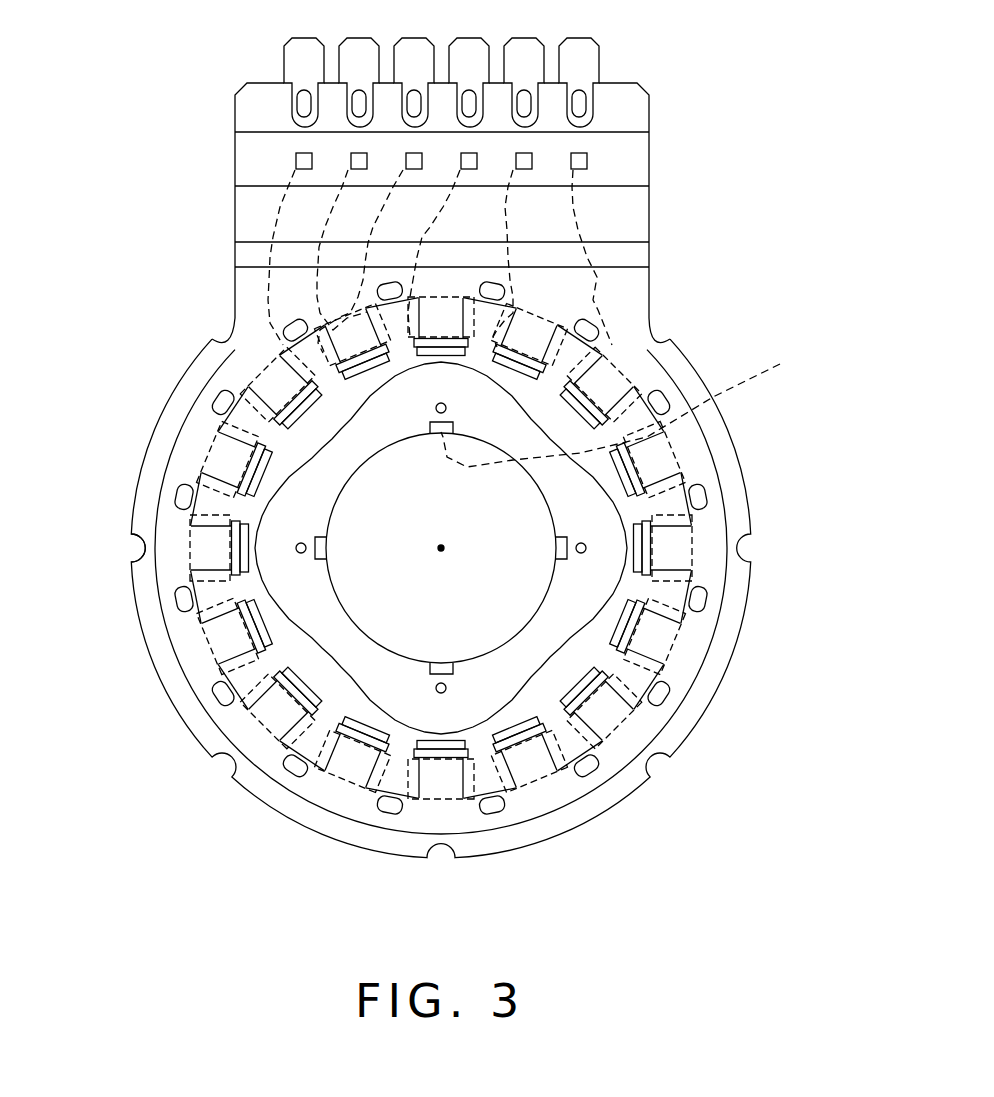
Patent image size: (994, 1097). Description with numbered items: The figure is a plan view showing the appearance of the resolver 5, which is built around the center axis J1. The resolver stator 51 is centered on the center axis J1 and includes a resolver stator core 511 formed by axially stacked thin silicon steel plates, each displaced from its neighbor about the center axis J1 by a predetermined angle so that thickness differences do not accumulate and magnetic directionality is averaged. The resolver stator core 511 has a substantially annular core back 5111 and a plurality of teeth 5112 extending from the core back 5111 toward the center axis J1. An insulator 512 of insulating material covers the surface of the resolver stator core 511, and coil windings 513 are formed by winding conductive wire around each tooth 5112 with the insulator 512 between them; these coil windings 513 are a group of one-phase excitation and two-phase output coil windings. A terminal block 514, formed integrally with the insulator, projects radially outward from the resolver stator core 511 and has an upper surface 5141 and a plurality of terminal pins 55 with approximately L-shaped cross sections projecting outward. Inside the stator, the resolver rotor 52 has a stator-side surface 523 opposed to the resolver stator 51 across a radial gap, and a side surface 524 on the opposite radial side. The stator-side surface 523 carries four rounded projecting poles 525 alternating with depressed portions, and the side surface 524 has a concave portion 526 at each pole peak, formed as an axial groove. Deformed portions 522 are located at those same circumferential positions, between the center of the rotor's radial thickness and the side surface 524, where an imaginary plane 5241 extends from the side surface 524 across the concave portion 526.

The resolver 5 is at (106, 77).
The resolver stator 51 is at (46, 456).
The resolver stator core 511 is at (62, 392).
The core back 5111 is at (195, 381).
The teeth 5112 is at (263, 417).
The insulator 512 is at (190, 456).
The coil windings 513 is at (146, 493).
The terminal block 514 is at (205, 190).
The upper surface 5141 is at (577, 200).
The terminal pins 55 is at (586, 158).
The resolver rotor 52 is at (577, 487).
The deformed portions 522 is at (587, 546).
The stator-side surface 523 is at (500, 657).
The side surface 524 is at (498, 643).
The imaginary plane 5241 is at (646, 409).
The projecting poles 525 is at (495, 680).
The concave portion 526 is at (590, 737).
The center axis J1 is at (441, 547).